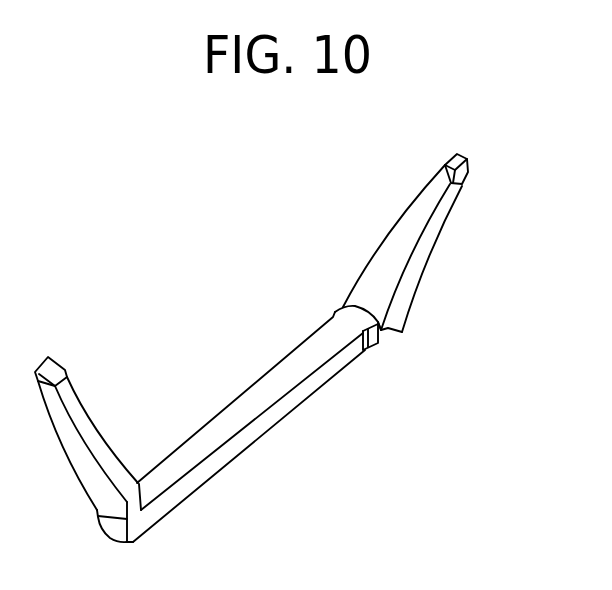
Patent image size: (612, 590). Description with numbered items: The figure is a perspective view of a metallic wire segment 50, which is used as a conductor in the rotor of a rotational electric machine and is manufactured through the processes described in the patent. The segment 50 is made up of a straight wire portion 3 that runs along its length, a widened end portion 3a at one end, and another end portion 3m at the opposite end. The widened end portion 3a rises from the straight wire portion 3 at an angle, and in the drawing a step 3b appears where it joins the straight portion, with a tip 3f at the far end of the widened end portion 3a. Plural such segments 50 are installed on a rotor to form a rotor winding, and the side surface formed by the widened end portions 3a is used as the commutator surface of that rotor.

The metallic wire segment 50 is at (248, 345).
The straight wire portion 3 is at (270, 417).
The end portion 3m is at (87, 428).
The widened end portion 3a is at (407, 285).
The stepped portion 3b is at (387, 327).
The tip end portion 3f is at (467, 160).